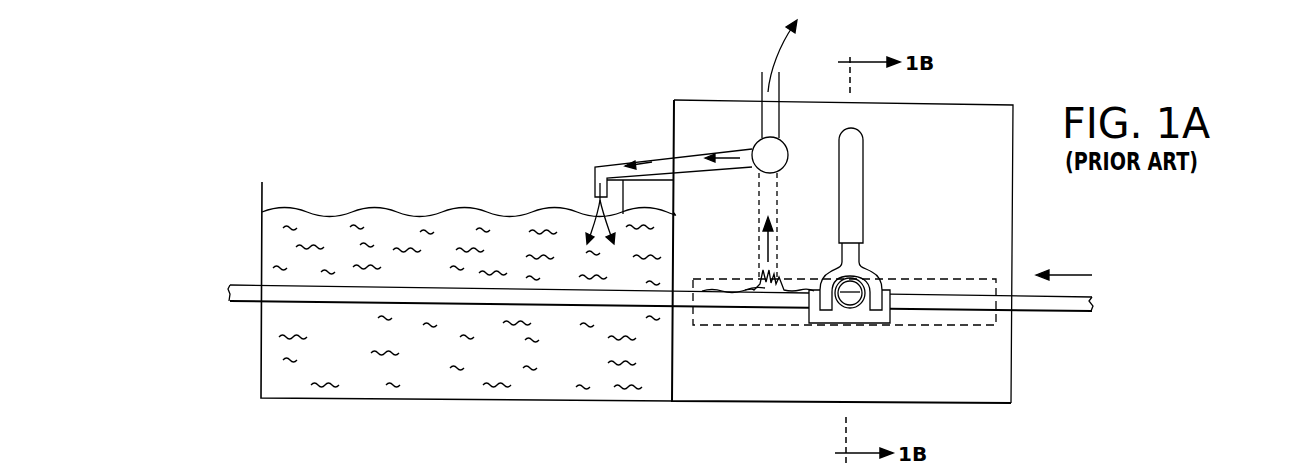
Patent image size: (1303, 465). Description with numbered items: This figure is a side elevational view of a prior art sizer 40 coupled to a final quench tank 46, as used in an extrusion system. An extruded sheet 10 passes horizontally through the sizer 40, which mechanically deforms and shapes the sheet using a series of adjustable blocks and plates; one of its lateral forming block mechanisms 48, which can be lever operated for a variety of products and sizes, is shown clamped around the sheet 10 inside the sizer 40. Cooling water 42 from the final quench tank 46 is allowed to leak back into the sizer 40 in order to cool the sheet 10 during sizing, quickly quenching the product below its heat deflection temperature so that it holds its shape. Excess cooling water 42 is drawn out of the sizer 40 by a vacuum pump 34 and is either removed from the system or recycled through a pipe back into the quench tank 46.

The extruded sheet 10 is at (388, 290).
The vacuum pump 34 is at (753, 146).
The sizer 40 is at (1012, 360).
The cooling water 42 is at (582, 371).
The final quench tank 46 is at (525, 401).
The lateral forming block mechanism 48 is at (838, 318).